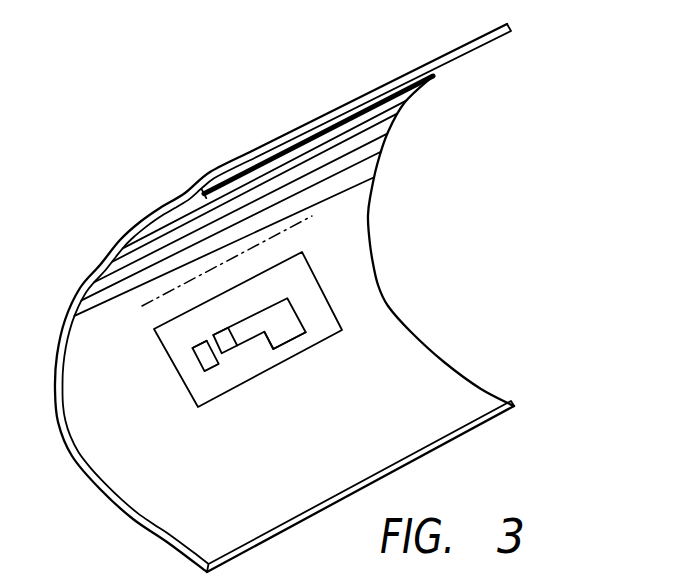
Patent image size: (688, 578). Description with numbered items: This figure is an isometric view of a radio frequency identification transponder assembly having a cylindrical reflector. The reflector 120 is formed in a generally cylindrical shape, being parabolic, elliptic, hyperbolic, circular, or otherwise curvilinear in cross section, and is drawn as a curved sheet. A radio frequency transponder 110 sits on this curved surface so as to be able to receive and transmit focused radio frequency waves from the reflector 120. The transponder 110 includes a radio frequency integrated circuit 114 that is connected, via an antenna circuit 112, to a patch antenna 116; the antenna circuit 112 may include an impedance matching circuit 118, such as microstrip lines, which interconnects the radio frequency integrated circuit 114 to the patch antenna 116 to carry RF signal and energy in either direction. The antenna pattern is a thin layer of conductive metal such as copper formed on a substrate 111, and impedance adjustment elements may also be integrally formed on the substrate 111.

The radio frequency transponder 110 is at (177, 371).
The substrate 111 is at (328, 327).
The antenna circuit 112 is at (300, 314).
The radio frequency integrated circuit 114 is at (220, 328).
The patch antenna 116 is at (292, 338).
The impedance matching circuit 118 is at (258, 313).
The reflector 120 is at (296, 136).